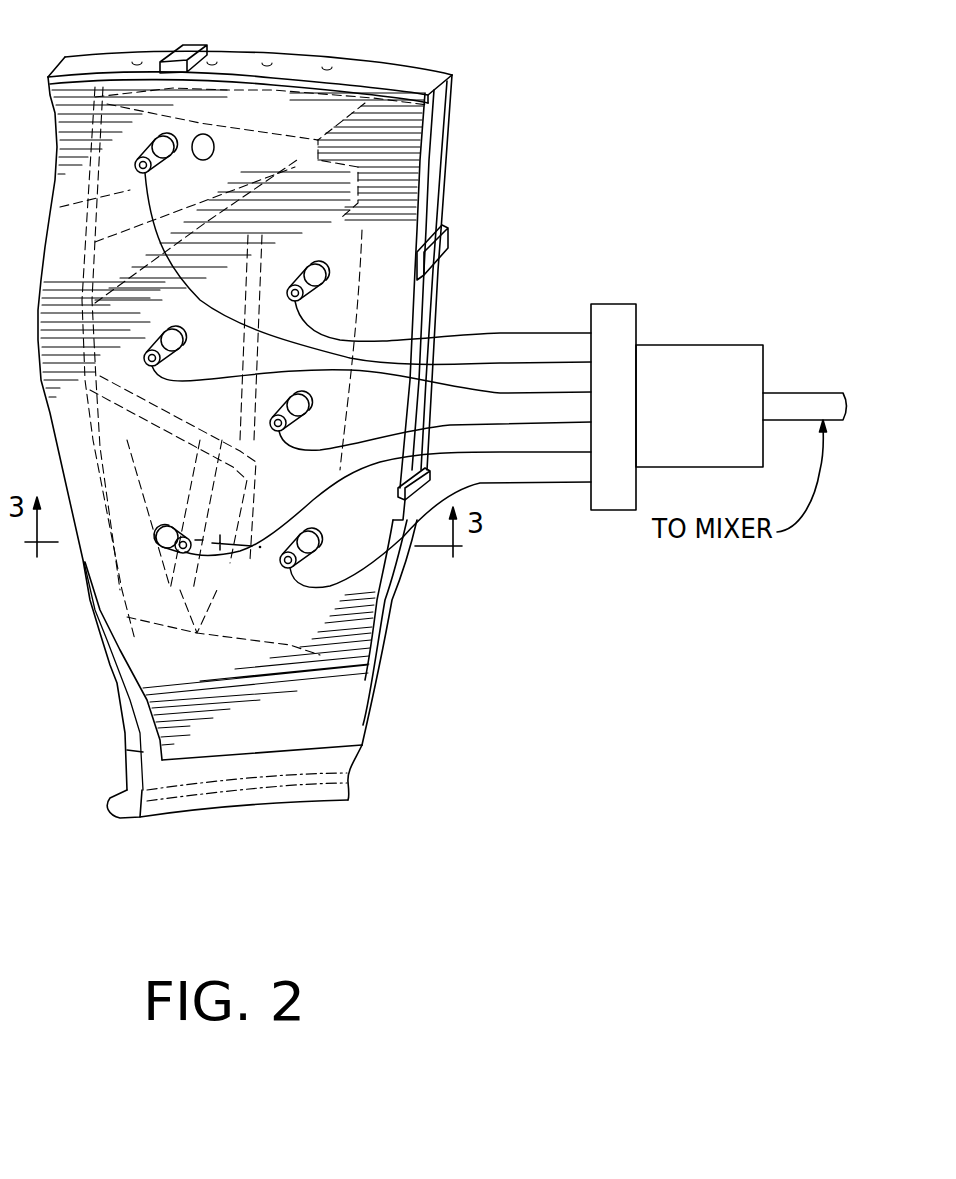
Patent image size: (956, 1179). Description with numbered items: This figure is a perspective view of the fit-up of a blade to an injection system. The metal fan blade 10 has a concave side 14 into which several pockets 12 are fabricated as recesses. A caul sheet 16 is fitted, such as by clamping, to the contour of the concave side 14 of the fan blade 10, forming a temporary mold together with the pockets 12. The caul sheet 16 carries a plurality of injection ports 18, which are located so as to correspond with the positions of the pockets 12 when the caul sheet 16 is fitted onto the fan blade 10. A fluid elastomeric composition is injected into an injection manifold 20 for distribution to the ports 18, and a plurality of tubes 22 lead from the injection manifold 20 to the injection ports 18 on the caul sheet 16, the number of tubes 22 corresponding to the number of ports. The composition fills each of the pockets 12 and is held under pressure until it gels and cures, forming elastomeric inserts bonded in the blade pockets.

The fan blade 10 is at (432, 52).
The pockets 12 is at (56, 206).
The concave side 14 is at (338, 755).
The caul sheet 16 is at (307, 70).
The injection ports 18 is at (327, 268).
The injection manifold 20 is at (672, 343).
The tubes 22 is at (568, 358).